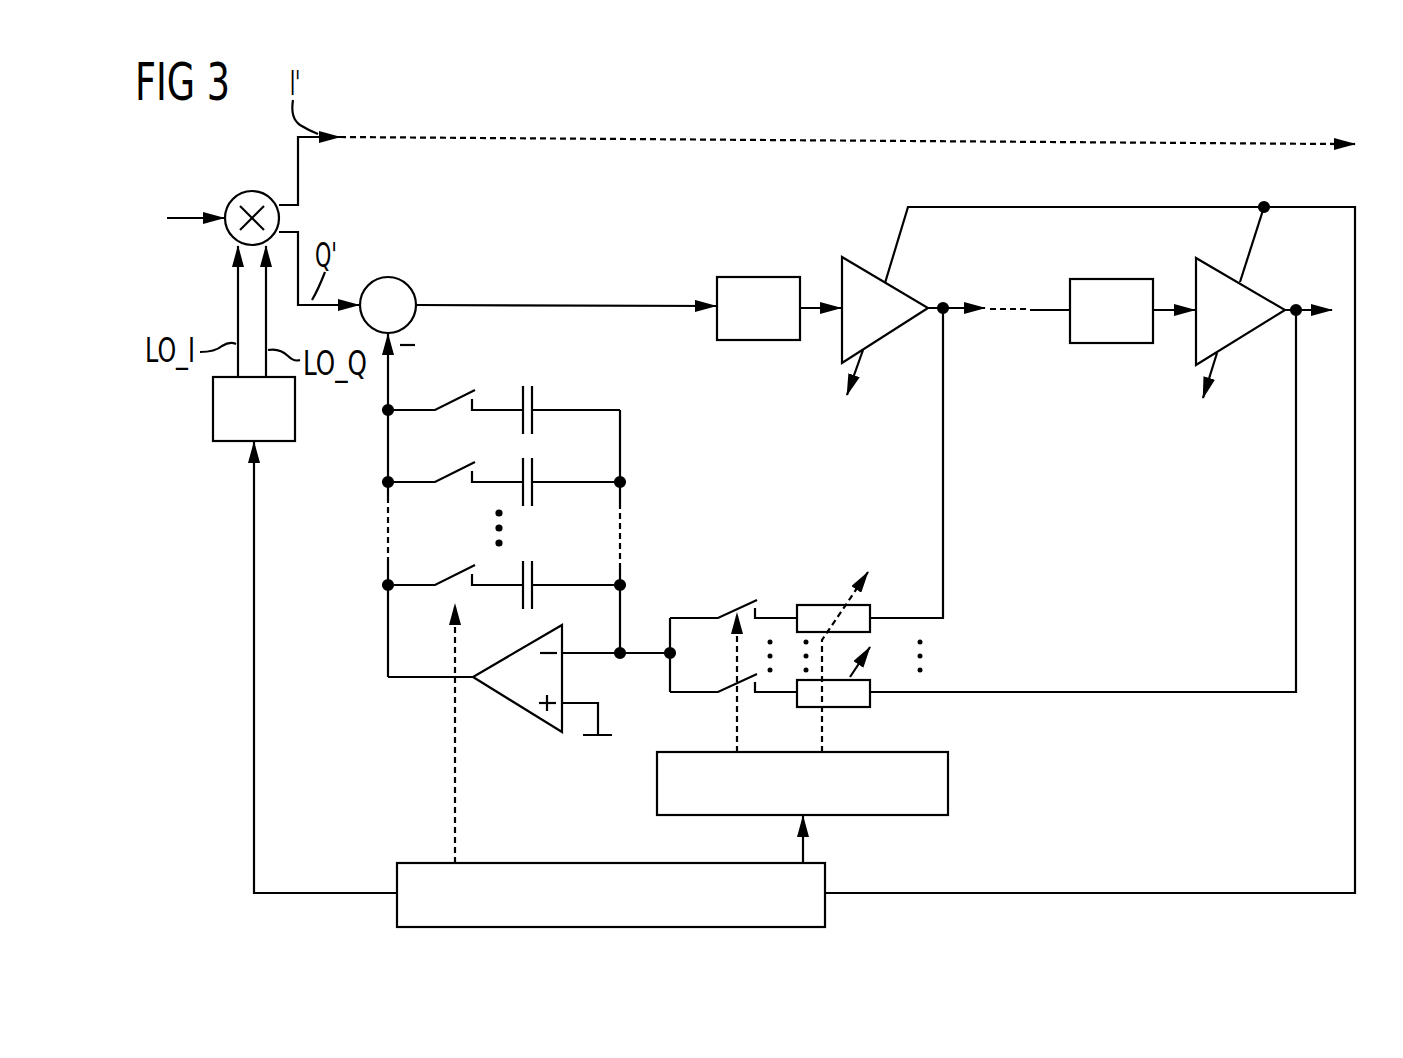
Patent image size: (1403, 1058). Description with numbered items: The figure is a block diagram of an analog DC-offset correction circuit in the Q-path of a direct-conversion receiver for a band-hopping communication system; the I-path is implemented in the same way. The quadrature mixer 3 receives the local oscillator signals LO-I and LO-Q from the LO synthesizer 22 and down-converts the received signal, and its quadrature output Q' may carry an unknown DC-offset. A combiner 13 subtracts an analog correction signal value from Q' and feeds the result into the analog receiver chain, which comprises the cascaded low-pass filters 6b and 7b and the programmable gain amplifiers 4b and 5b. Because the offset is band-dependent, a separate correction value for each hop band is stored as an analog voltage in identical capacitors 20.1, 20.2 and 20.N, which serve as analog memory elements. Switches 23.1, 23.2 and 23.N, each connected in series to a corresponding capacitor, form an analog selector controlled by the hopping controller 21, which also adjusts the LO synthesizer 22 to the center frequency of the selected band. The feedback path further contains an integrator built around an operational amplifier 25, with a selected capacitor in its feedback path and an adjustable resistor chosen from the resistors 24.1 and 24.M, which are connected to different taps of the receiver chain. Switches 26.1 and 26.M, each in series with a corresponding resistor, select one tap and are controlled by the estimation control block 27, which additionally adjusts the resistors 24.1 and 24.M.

The quadrature mixer 3 is at (236, 234).
The combiner 13 is at (390, 277).
The LO synthesizer 22 is at (213, 405).
The switch 23.1 is at (462, 394).
The switch 23.2 is at (445, 472).
The switch 23.N is at (445, 576).
The capacitor 20.1 is at (535, 400).
The capacitor 20.2 is at (535, 472).
The capacitor 20.N is at (535, 575).
The operational amplifier 25 is at (514, 710).
The switch 26.1 is at (729, 612).
The switch 26.M is at (724, 693).
The adjustable resistor 24.1 is at (826, 605).
The adjustable resistor 24.M is at (872, 706).
The estimation control block 27 is at (948, 786).
The hopping controller 21 is at (585, 863).
The low-pass filter 6b is at (754, 277).
The low-pass filter 7b is at (1108, 279).
The programmable gain amplifier 4b is at (886, 340).
The programmable gain amplifier 5b is at (1198, 352).